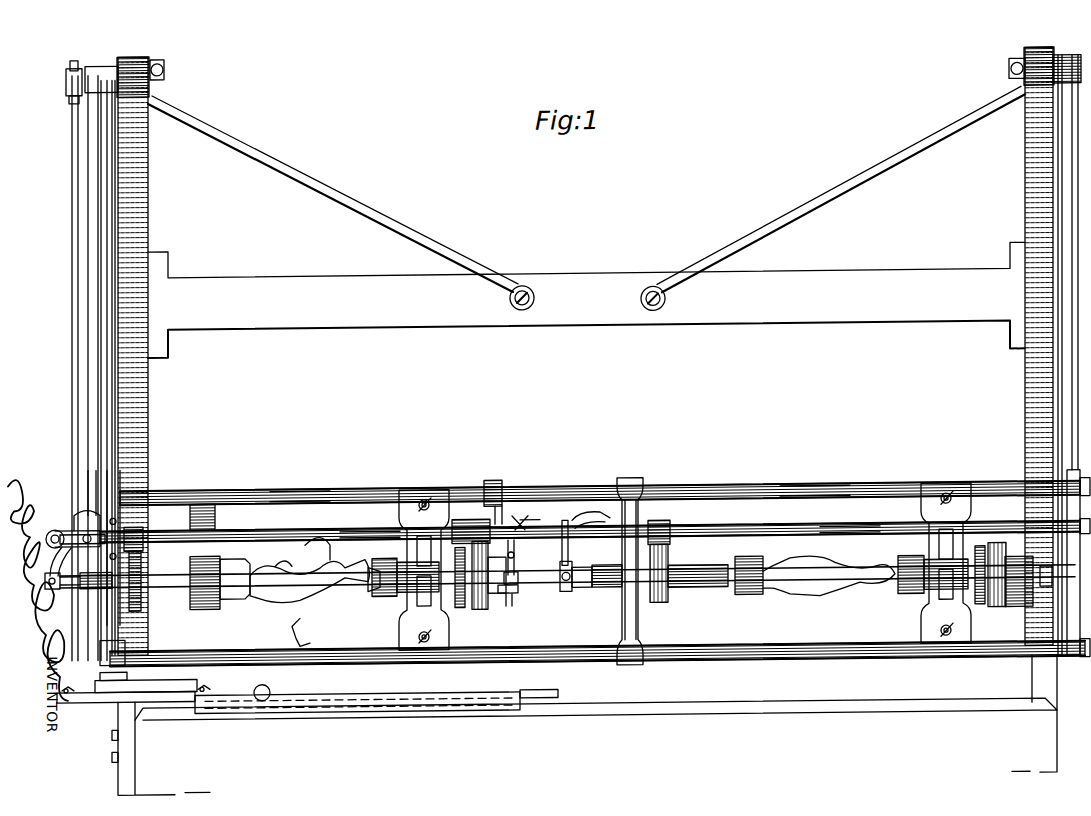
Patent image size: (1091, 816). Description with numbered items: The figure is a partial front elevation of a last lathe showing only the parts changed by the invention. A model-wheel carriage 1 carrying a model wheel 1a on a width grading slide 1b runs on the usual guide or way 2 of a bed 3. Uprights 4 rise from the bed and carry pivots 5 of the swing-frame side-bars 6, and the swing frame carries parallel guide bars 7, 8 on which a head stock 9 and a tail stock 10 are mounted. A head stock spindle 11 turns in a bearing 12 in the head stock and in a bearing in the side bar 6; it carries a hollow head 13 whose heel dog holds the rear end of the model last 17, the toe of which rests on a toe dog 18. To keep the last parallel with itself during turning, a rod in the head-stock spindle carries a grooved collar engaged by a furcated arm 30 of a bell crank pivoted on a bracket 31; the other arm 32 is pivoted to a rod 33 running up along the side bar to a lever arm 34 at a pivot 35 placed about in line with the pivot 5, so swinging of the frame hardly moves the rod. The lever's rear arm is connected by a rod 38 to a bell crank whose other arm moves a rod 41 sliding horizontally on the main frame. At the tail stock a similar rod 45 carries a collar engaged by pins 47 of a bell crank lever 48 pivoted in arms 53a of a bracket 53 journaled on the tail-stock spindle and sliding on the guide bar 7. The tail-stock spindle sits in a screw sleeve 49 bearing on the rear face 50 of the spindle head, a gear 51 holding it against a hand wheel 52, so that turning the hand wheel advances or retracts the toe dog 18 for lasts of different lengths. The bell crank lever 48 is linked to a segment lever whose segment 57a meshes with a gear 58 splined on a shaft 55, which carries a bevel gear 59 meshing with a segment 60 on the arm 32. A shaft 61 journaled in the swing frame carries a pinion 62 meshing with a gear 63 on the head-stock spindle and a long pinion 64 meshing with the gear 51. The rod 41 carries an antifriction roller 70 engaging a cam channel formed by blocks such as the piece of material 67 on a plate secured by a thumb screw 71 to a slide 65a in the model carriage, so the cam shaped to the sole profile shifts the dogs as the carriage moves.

The model-wheel carriage 1 is at (258, 714).
The model wheel 1a is at (318, 547).
The width grading slide 1b is at (300, 645).
The guide or way 2 is at (165, 722).
The bed 3 is at (125, 780).
The uprights 4 is at (140, 418).
The pivots 5 is at (165, 72).
The swing-frame side-bars 6 is at (133, 238).
The guide bar 7 is at (290, 503).
The guide bar 8 is at (368, 661).
The head stock 9 is at (205, 503).
The tail stock 10 is at (424, 492).
The head stock spindle 11 is at (180, 587).
The bearing 12 is at (205, 585).
The hollow head 13 is at (245, 598).
The model last 17 is at (330, 582).
The toe dog 18 is at (370, 592).
The furcated arm 30 is at (85, 588).
The bracket 31 is at (50, 530).
The arm 32 is at (88, 546).
The rod 33 is at (92, 366).
The lever arm 34 is at (74, 62).
The pivot 35 is at (66, 84).
The rod 38 is at (90, 222).
The rod 41 is at (98, 694).
The rod 45 is at (510, 608).
The pins 47 is at (518, 592).
The bell crank lever 48 is at (518, 576).
The screw sleeve 49 is at (458, 601).
The rear face 50 is at (400, 599).
The gear 51 is at (496, 599).
The hand wheel 52 is at (478, 607).
The bracket 53 is at (494, 484).
The arms 53a is at (515, 554).
The shaft 55 is at (265, 508).
The segment 57a is at (515, 523).
The gear 58 is at (538, 526).
The bevel gear 59 is at (90, 505).
The segment 60 is at (78, 520).
The shaft 61 is at (330, 535).
The pinion 62 is at (140, 530).
The gear 63 is at (130, 595).
The long pinion 64 is at (465, 523).
The slide 65a is at (558, 696).
The piece of material 67 is at (175, 690).
The antifriction roller 70 is at (112, 692).
The thumb screw 71 is at (64, 686).